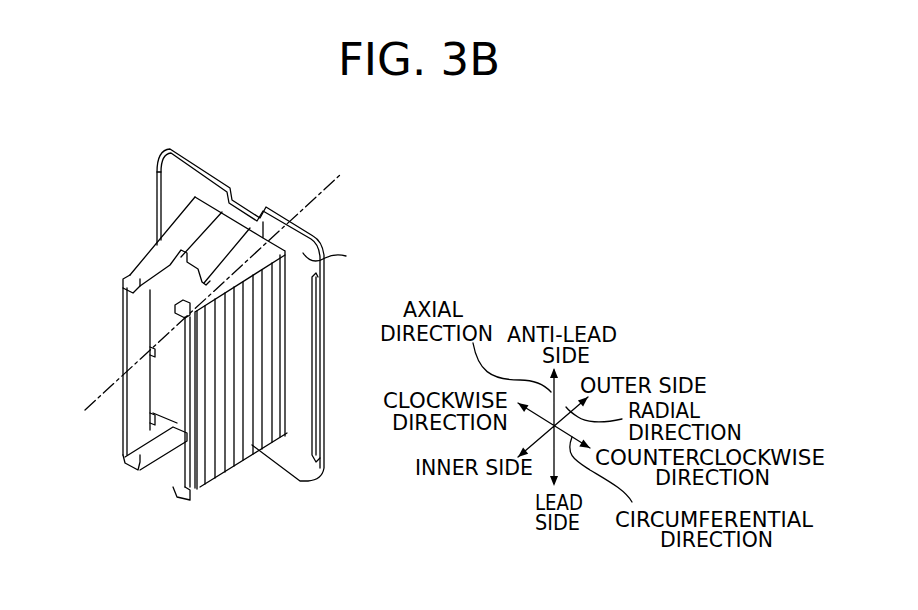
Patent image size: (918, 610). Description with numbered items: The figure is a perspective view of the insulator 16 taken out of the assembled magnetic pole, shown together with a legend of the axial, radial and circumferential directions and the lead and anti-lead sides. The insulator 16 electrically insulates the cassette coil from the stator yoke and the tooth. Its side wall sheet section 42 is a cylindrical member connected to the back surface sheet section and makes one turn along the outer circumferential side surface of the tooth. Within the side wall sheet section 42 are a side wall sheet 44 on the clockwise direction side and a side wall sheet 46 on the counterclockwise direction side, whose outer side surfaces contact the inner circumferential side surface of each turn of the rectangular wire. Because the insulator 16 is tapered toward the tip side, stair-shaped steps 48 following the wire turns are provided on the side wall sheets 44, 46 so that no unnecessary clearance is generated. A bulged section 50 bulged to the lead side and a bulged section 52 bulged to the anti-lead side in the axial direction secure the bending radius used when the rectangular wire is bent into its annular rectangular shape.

The insulator 16 is at (131, 179).
The side wall sheet section 42 is at (216, 420).
The side wall sheet on the clockwise direction side 44 is at (123, 334).
The side wall sheet on the counterclockwise direction side 46 is at (197, 480).
The stair-shaped step 48 is at (241, 390).
The bulged section bulged to the lead side 50 is at (180, 463).
The bulged section bulged to the anti-lead side 52 is at (213, 240).